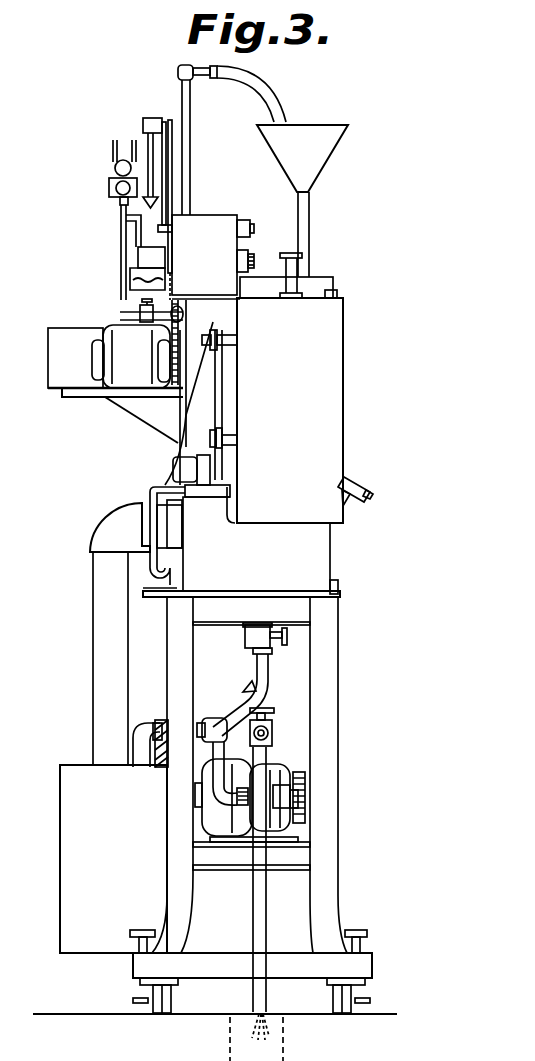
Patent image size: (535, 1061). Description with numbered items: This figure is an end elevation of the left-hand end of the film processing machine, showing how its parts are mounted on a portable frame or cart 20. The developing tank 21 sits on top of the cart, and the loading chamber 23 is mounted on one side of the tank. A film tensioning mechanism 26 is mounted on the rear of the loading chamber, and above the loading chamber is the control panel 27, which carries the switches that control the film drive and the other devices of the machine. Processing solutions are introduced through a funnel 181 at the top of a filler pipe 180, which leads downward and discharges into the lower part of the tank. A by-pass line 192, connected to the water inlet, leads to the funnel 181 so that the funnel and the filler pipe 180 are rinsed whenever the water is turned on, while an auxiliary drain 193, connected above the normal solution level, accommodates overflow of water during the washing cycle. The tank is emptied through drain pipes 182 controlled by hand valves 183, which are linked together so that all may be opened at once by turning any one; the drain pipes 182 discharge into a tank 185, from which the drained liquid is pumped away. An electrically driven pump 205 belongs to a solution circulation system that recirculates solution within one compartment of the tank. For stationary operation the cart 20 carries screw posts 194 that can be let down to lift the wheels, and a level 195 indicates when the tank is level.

The portable frame or cart 20 is at (327, 672).
The developing tank 21 is at (320, 545).
The loading chamber 23 is at (327, 366).
The film tensioning mechanism 26 is at (115, 384).
The control panel 27 is at (213, 225).
The filler pipe 180 is at (300, 228).
The funnel 181 is at (318, 155).
The drain pipes 182 is at (226, 703).
The hand valves 183 is at (248, 635).
The tank 185 is at (75, 872).
The by-pass line 192 is at (190, 113).
The auxiliary drain 193 is at (100, 602).
The screw posts 194 is at (145, 930).
The level 195 is at (340, 585).
The electrically driven pump 205 is at (160, 592).